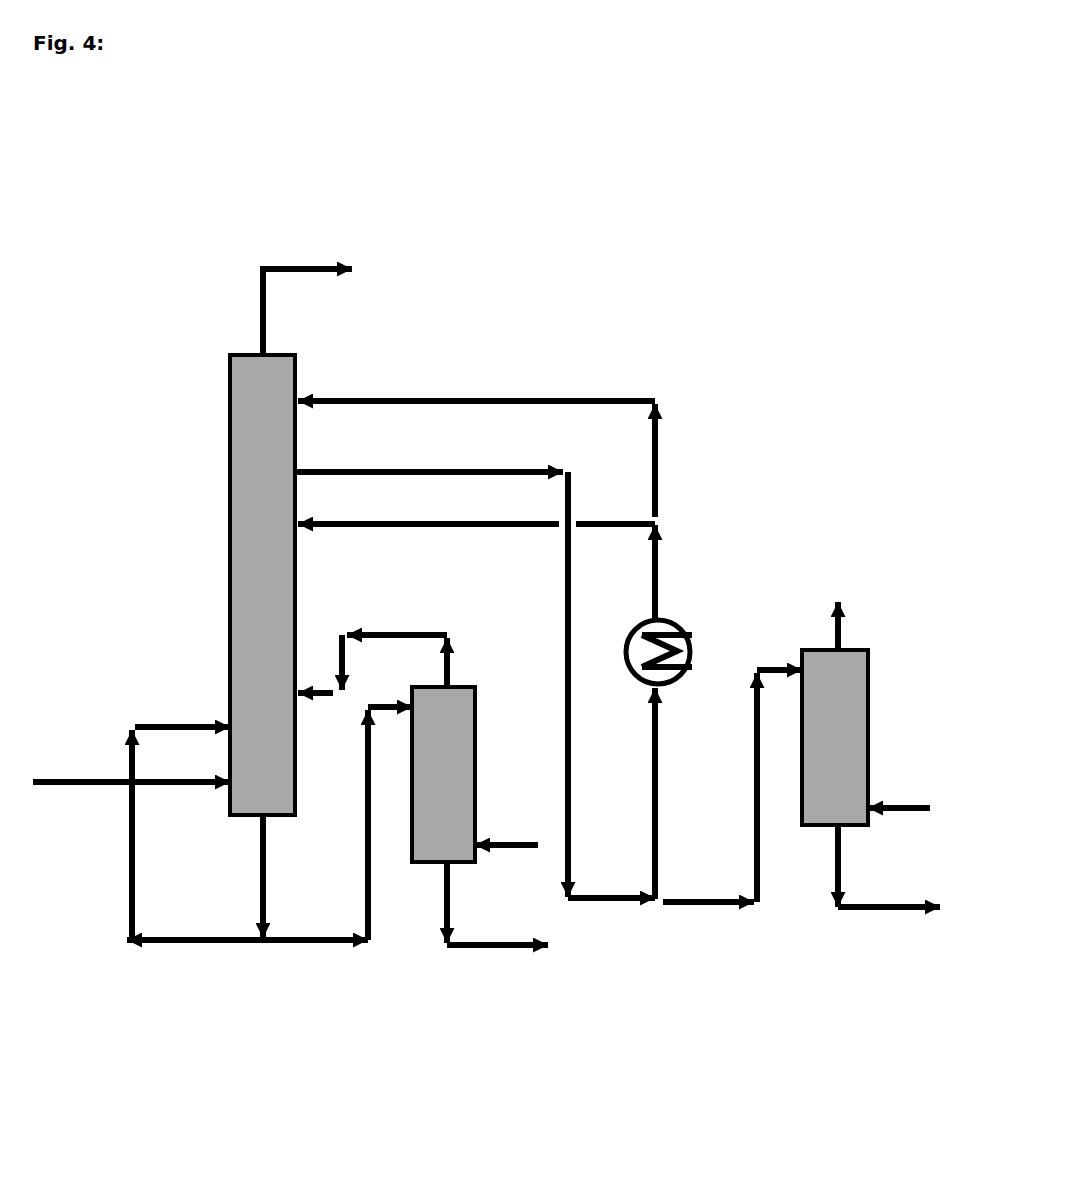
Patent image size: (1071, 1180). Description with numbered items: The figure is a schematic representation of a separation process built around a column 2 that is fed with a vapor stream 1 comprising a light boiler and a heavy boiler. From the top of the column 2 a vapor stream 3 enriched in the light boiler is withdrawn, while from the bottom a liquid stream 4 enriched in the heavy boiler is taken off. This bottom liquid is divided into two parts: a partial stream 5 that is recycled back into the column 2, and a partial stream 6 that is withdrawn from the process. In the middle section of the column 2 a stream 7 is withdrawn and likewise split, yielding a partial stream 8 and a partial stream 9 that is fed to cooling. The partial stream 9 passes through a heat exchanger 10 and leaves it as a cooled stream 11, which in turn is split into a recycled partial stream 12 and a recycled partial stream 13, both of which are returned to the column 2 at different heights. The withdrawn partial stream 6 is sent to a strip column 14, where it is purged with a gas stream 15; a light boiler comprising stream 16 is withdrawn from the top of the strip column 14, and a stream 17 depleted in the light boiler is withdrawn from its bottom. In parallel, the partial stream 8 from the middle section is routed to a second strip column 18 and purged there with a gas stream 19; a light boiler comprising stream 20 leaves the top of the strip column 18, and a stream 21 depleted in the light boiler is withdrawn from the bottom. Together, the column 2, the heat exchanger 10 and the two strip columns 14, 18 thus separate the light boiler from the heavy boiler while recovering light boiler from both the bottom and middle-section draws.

The vapor stream 1 is at (131, 757).
The column 2 is at (239, 585).
The vapor stream enriched in the light boiler 3 is at (307, 290).
The liquid stream enriched in the heavy boiler 4 is at (246, 876).
The partial stream 5 is at (195, 833).
The partial stream 6 is at (337, 823).
The stream withdrawn from the middle section of column 7 is at (475, 663).
The partial stream 8 is at (732, 786).
The partial stream 9 is at (674, 793).
The heat exchanger 10 is at (681, 652).
The cooled stream 11 is at (680, 572).
The recycled partial stream 12 is at (476, 436).
The recycled partial stream 13 is at (476, 545).
The strip column 14 is at (465, 774).
The gas stream 15 is at (506, 824).
The light boiler comprising stream 16 is at (372, 642).
The stream depleted in the light boiler 17 is at (497, 903).
The strip column 18 is at (856, 737).
The gas stream 19 is at (899, 787).
The light boiler comprising stream 20 is at (837, 607).
The stream depleted in the light boiler 21 is at (889, 866).